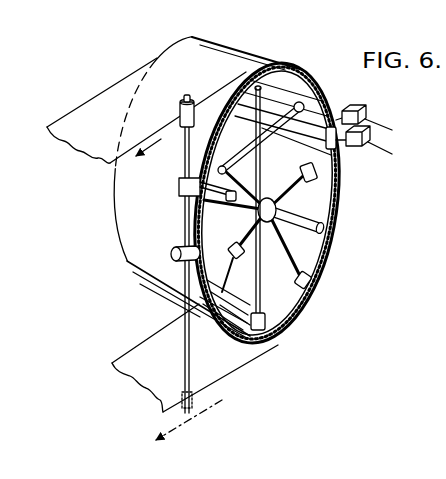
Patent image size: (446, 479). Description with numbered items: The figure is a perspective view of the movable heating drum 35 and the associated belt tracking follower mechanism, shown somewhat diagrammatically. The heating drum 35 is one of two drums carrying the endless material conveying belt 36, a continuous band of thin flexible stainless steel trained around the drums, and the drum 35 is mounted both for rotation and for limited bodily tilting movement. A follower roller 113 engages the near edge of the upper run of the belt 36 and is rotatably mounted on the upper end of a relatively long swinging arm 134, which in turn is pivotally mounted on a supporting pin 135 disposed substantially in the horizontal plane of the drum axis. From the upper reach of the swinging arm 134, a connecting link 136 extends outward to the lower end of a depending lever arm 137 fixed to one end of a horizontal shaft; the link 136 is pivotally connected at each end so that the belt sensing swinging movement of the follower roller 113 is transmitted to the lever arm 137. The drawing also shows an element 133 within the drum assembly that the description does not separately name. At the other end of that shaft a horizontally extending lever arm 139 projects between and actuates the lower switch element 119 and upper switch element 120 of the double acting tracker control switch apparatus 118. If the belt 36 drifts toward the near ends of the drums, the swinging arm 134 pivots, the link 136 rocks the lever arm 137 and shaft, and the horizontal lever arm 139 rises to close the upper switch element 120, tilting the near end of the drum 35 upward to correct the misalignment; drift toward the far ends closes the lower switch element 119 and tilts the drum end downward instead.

The heating drum 35 is at (117, 190).
The endless material conveying belt 36 is at (80, 112).
The follower roller 113 is at (187, 113).
The double acting tracker control switch apparatus 118 is at (323, 103).
The lower switch element 119 is at (351, 147).
The upper switch element 120 is at (355, 108).
The rod 133 is at (236, 157).
The swinging arm 134 is at (185, 162).
The supporting pin 135 is at (175, 248).
The connecting link 136 is at (180, 197).
The lever arm 137 is at (215, 163).
The horizontal lever arm 139 is at (334, 172).